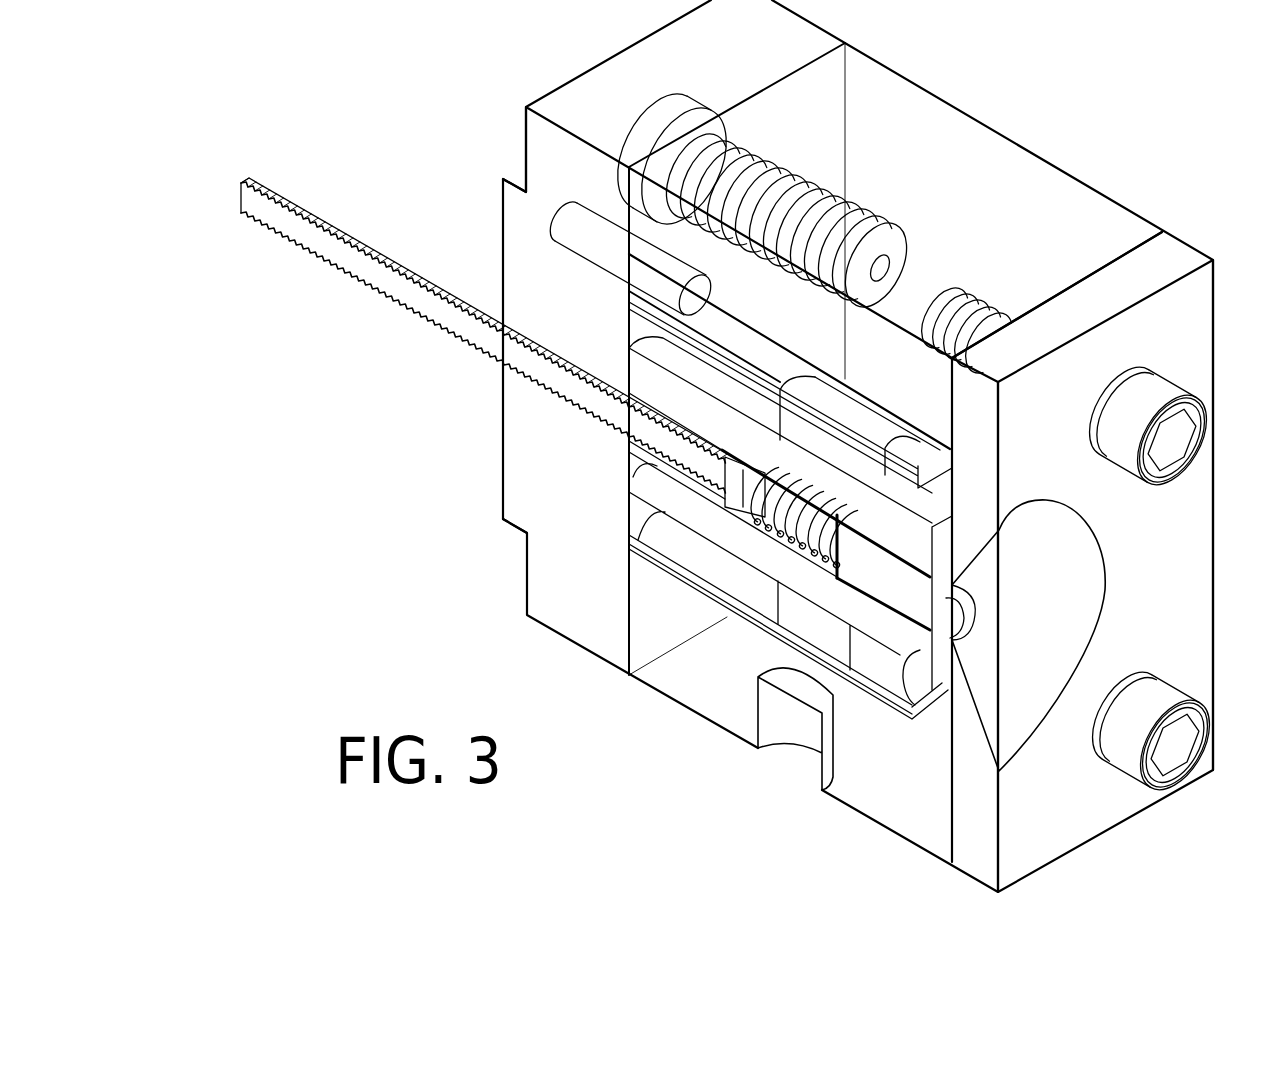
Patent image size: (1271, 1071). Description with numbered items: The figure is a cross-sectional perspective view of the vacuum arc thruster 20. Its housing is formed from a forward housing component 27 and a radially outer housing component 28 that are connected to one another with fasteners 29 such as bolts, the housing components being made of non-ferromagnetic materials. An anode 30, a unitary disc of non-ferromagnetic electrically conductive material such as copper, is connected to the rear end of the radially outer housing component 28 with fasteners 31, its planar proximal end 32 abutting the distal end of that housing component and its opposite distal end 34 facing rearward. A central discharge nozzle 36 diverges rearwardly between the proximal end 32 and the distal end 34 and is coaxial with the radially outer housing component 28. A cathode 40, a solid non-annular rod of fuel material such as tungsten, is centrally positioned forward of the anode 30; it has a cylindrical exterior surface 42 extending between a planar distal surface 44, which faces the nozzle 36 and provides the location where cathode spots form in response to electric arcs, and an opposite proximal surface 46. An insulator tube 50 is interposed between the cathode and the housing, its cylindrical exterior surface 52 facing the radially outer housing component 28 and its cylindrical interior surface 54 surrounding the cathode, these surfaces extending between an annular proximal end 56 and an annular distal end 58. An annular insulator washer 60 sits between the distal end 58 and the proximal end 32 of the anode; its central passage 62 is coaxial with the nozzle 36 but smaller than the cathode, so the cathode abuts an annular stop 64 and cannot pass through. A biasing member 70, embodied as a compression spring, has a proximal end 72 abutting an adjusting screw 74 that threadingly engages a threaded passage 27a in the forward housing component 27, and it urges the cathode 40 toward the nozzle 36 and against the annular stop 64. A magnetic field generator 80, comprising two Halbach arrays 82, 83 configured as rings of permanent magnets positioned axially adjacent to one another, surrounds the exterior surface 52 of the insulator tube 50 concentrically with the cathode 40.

The thruster 20 is at (462, 115).
The forward housing component 27 is at (550, 183).
The threaded passage 27a is at (565, 405).
The radially outer housing component 28 is at (752, 301).
The fasteners 29 is at (793, 186).
The anode 30 is at (1186, 258).
The fasteners 31 is at (1180, 400).
The proximal end 32 is at (1088, 276).
The distal end 34 is at (1170, 343).
The central discharge nozzle 36 is at (990, 597).
The cathode 40 is at (880, 590).
The cylindrical exterior surface 42 is at (843, 582).
The distal surface 44 is at (913, 632).
The proximal surface 46 is at (836, 525).
The insulator tube 50 is at (667, 410).
The cylindrical exterior surface 52 is at (629, 526).
The cylindrical interior surface 54 is at (643, 470).
The annular proximal end 56 is at (629, 377).
The annular distal end 58 is at (907, 708).
The insulator washer 60 is at (943, 553).
The central passage 62 is at (968, 622).
The annular stop 64 is at (918, 577).
The biasing member 70 is at (758, 536).
The proximal end 72 is at (760, 465).
The adjusting screw 74 is at (487, 335).
The magnetic field generator 80 is at (790, 371).
The Halbach array 82 is at (815, 440).
The Halbach array 83 is at (920, 475).